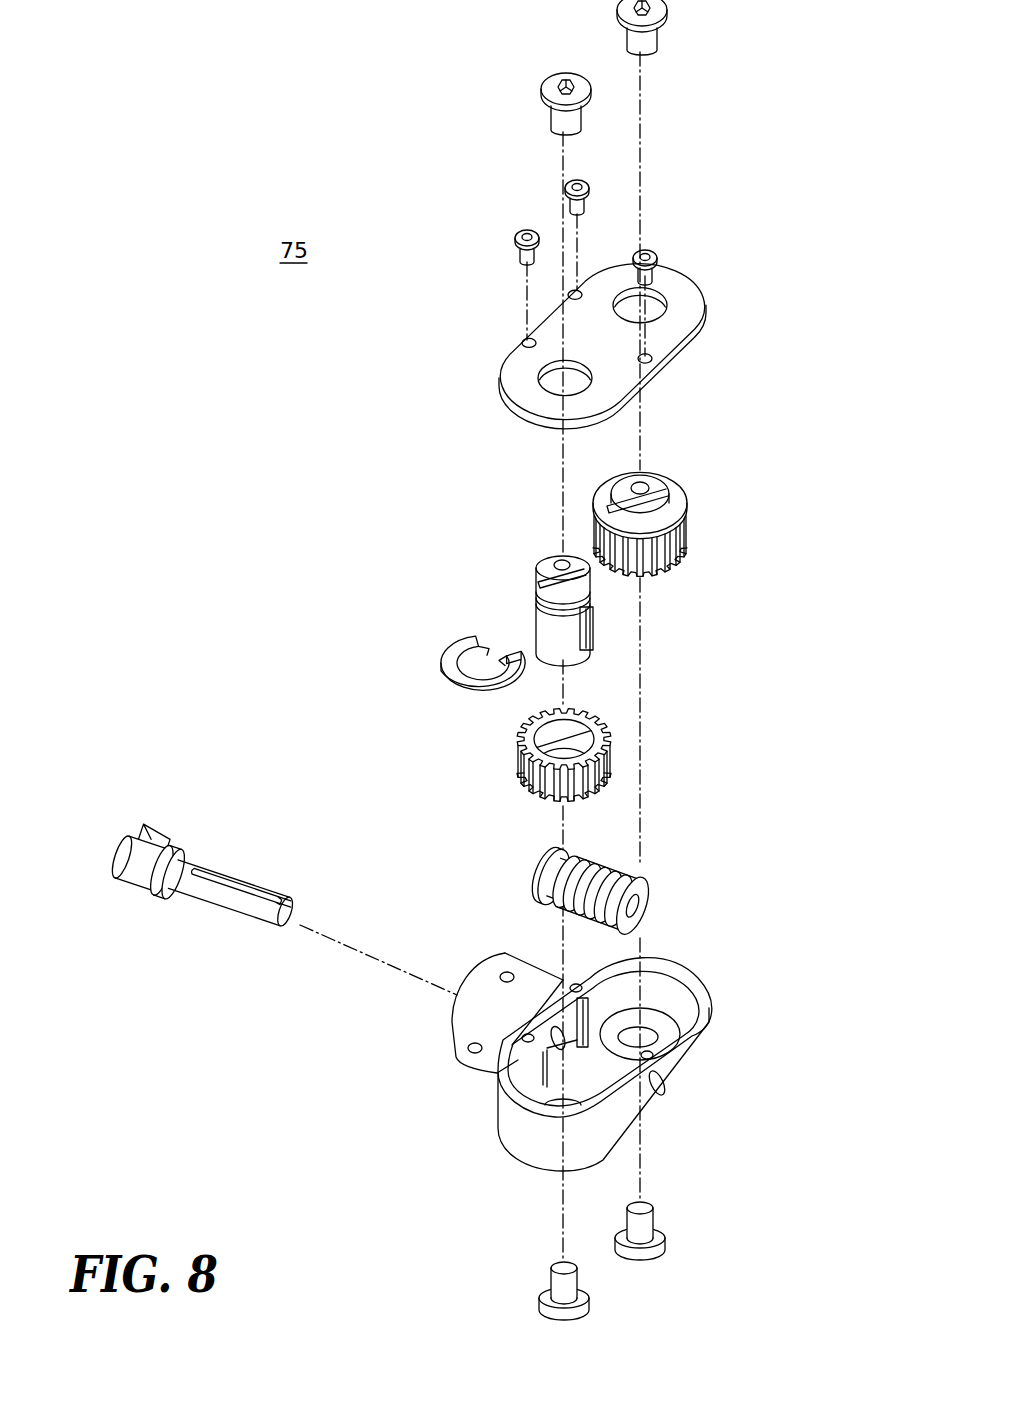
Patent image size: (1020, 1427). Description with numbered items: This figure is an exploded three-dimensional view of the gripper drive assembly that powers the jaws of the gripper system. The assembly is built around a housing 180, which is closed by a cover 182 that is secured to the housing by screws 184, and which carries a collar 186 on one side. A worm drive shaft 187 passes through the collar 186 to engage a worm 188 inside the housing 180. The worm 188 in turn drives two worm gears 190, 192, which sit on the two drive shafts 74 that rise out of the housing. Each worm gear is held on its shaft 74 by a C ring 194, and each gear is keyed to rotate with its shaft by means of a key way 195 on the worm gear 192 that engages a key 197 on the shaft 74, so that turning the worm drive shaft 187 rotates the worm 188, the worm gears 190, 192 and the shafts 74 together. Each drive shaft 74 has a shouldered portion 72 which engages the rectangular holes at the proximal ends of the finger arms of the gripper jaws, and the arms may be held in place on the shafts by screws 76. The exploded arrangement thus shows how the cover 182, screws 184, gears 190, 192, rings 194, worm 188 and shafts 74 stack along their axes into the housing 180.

The screws 76 is at (580, 117).
The screws 184 is at (648, 248).
The cover 182 is at (682, 283).
The worm gear 190 is at (687, 538).
The drive shafts 74 is at (647, 474).
The shouldered portions 72 is at (662, 488).
The C ring 194 is at (604, 496).
The key 197 is at (593, 620).
The worm gear 192 is at (610, 735).
The key way 195 is at (493, 739).
The worm 188 is at (648, 888).
The worm drive shaft 187 is at (200, 883).
The collar 186 is at (468, 1028).
The housing 180 is at (700, 1034).